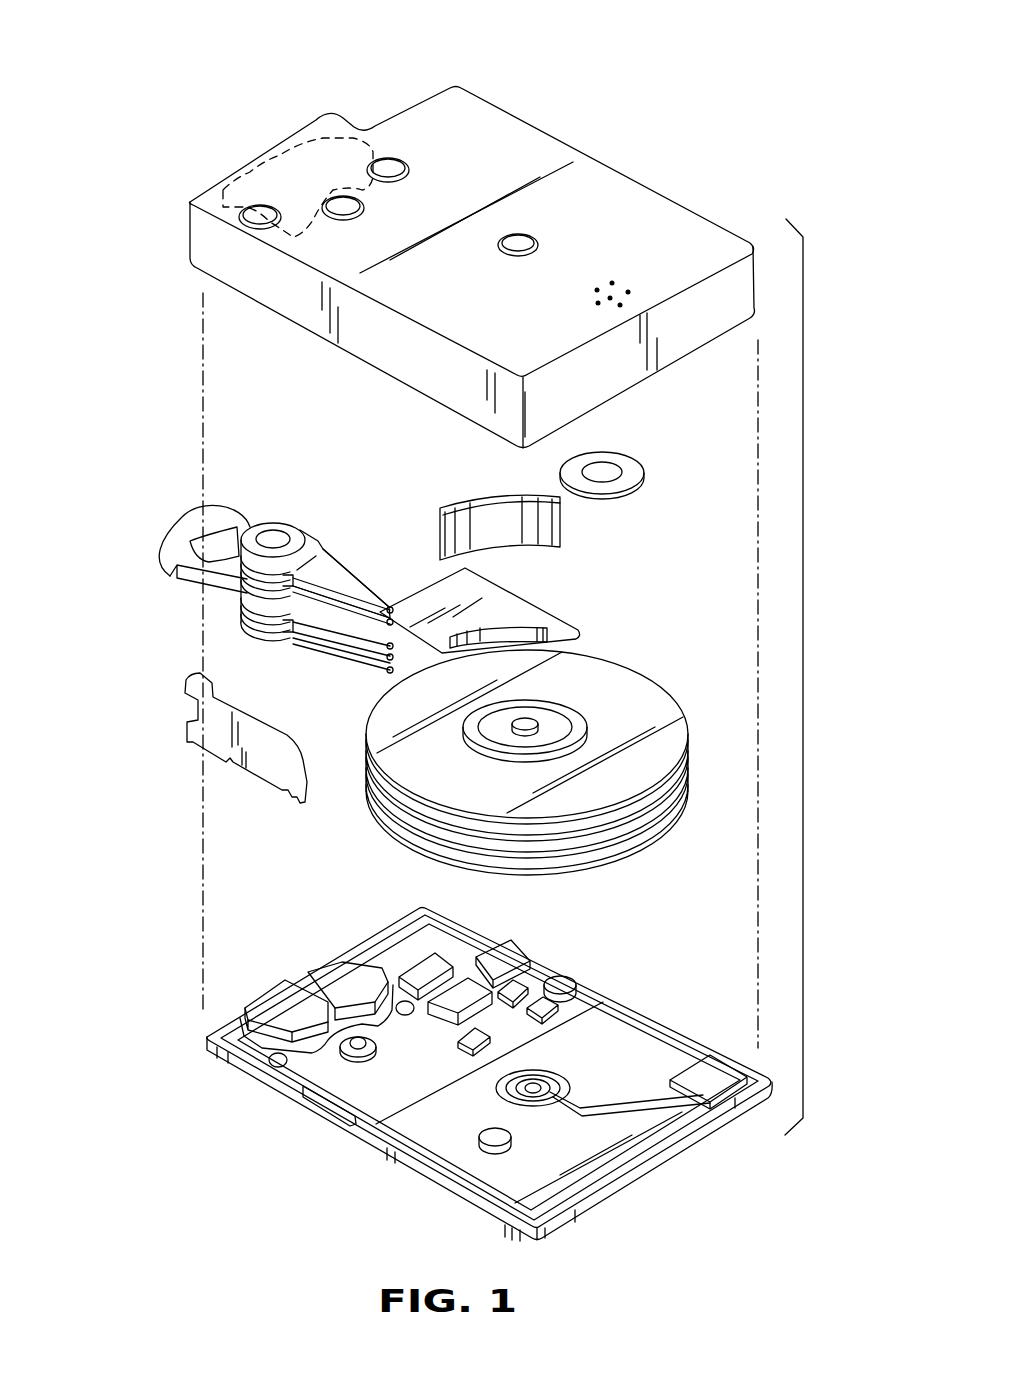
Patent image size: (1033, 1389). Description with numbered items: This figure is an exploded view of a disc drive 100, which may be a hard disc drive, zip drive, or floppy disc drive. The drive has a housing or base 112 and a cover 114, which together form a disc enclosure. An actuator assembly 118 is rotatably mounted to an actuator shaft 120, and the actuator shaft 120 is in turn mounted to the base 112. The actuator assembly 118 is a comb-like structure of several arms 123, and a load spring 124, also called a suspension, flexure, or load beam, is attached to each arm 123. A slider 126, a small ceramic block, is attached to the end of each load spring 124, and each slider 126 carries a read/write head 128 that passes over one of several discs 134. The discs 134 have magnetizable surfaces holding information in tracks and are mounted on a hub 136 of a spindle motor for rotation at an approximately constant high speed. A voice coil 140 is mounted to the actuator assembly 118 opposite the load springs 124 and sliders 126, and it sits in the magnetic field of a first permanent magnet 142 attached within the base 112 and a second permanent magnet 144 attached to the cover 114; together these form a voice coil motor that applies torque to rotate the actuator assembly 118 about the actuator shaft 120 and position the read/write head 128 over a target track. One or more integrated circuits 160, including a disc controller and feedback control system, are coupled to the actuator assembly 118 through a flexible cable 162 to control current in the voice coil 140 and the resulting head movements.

The disc drive 100 is at (645, 107).
The base 112 is at (657, 1043).
The cover 114 is at (637, 203).
The actuator assembly 118 is at (230, 635).
The actuator shaft 120 is at (277, 530).
The arm 123 is at (303, 530).
The load spring 124 is at (343, 580).
The slider 126 is at (392, 603).
The read/write head 128 is at (390, 612).
The disc 134 is at (653, 700).
The hub 136 is at (540, 713).
The voice coil 140 is at (180, 540).
The first permanent magnet 142 is at (270, 1002).
The second permanent magnet 144 is at (296, 147).
The integrated circuits 160 is at (497, 952).
The flexible cable 162 is at (197, 740).